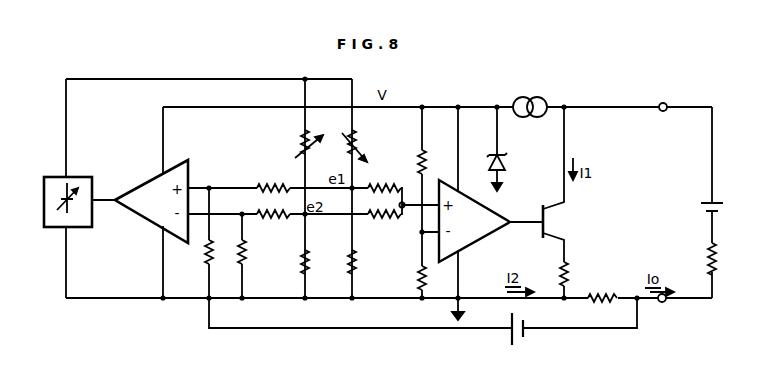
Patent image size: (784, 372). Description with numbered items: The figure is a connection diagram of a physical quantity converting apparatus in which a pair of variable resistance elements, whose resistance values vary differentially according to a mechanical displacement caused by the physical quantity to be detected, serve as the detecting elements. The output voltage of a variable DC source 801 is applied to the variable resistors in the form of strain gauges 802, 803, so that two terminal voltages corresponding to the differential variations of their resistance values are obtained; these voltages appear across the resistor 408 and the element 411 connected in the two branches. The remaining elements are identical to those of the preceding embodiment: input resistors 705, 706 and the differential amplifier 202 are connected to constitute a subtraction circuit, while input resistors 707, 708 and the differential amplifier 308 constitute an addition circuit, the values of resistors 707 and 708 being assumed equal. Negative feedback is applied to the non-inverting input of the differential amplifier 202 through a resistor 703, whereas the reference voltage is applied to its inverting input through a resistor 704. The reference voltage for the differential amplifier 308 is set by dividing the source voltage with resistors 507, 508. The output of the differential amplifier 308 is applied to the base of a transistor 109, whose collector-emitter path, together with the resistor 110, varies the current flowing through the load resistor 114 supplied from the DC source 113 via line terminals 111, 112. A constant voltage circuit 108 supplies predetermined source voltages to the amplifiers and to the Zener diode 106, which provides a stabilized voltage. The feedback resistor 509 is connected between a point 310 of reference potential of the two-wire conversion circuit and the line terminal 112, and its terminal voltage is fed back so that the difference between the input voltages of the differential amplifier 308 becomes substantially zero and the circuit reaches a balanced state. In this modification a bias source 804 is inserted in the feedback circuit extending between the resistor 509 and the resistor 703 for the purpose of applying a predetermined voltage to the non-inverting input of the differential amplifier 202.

The variable DC source 801 is at (72, 192).
The differential amplifier 202 is at (151, 201).
The resistor 703 is at (207, 254).
The resistor 704 is at (245, 254).
The input resistor 705 is at (272, 179).
The input resistor 706 is at (272, 207).
The input resistor 707 is at (384, 179).
The input resistor 708 is at (384, 226).
The strain gauge 803 is at (299, 144).
The strain gauge 802 is at (364, 146).
The resistor 408 is at (303, 264).
The capacitor 411 is at (364, 265).
The resistor 507 is at (436, 162).
The resistor 508 is at (436, 278).
The differential amplifier 308 is at (474, 221).
The point of reference potential 310 is at (469, 316).
The Zener diode 106 is at (510, 172).
The constant voltage circuit 108 is at (530, 97).
The transistor 109 is at (565, 221).
The resistor 110 is at (578, 274).
The feedback resistor 509 is at (608, 290).
The bias source 804 is at (528, 337).
The line terminal 111 is at (665, 98).
The line terminal 112 is at (668, 310).
The DC source 113 is at (726, 206).
The load resistor 114 is at (726, 259).